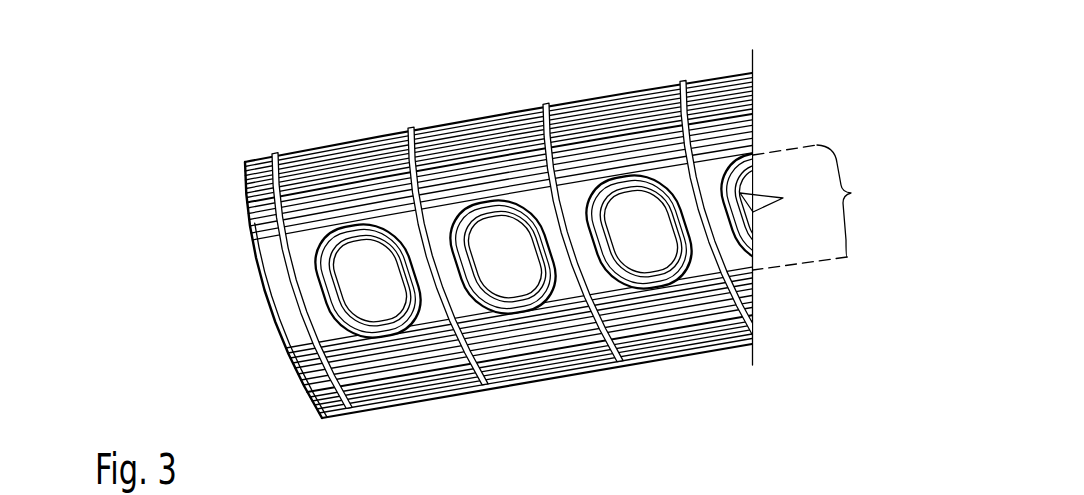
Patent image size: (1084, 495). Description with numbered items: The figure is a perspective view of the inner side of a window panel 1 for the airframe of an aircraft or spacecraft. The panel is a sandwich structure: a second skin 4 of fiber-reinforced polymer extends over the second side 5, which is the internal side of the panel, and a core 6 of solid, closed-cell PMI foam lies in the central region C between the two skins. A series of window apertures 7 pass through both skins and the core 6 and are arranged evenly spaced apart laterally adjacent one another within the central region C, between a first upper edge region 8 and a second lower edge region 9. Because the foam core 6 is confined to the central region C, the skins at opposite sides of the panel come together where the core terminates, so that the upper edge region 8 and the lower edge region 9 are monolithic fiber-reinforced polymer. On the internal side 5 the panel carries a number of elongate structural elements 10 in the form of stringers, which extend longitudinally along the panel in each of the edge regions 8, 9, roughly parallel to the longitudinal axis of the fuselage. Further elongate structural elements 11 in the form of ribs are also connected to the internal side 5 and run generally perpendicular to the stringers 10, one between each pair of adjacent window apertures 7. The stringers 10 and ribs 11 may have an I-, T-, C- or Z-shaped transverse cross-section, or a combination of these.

The window panel 1 is at (141, 131).
The second skin 4 is at (278, 266).
The second side 5 is at (366, 196).
The core 6 is at (273, 298).
The window apertures 7 is at (373, 302).
The first upper edge region 8 is at (617, 103).
The second lower edge region 9 is at (663, 344).
The elongate structural elements 10 is at (262, 212).
The elongate structural elements 11 is at (432, 236).
The central region C is at (805, 207).